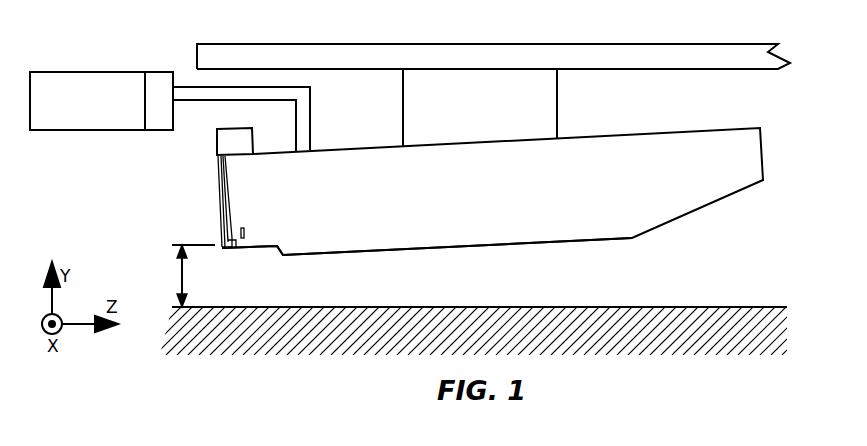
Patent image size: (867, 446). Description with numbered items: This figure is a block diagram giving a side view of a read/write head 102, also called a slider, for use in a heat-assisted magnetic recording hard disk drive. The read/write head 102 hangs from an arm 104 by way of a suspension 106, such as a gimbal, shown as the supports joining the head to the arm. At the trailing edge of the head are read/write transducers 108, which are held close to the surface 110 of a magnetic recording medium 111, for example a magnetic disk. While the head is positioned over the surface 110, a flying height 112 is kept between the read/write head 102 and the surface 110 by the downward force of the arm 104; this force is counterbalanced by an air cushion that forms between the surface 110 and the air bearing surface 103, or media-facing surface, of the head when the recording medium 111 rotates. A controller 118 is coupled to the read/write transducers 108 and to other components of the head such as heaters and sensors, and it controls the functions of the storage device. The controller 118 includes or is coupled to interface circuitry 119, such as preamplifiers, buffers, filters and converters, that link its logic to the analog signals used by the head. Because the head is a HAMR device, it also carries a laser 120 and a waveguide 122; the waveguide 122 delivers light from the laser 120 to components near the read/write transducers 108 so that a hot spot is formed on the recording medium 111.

The read/write head 102 is at (670, 137).
The air bearing surface 103 is at (365, 253).
The arm 104 is at (715, 50).
The suspension 106 is at (556, 100).
The read/write transducers 108 is at (225, 226).
The surface 110 is at (672, 307).
The magnetic recording medium 111 is at (684, 345).
The flying height 112 is at (179, 276).
The controller 118 is at (82, 72).
The interface circuitry 119 is at (155, 72).
The laser 120 is at (235, 134).
The waveguide 122 is at (222, 177).